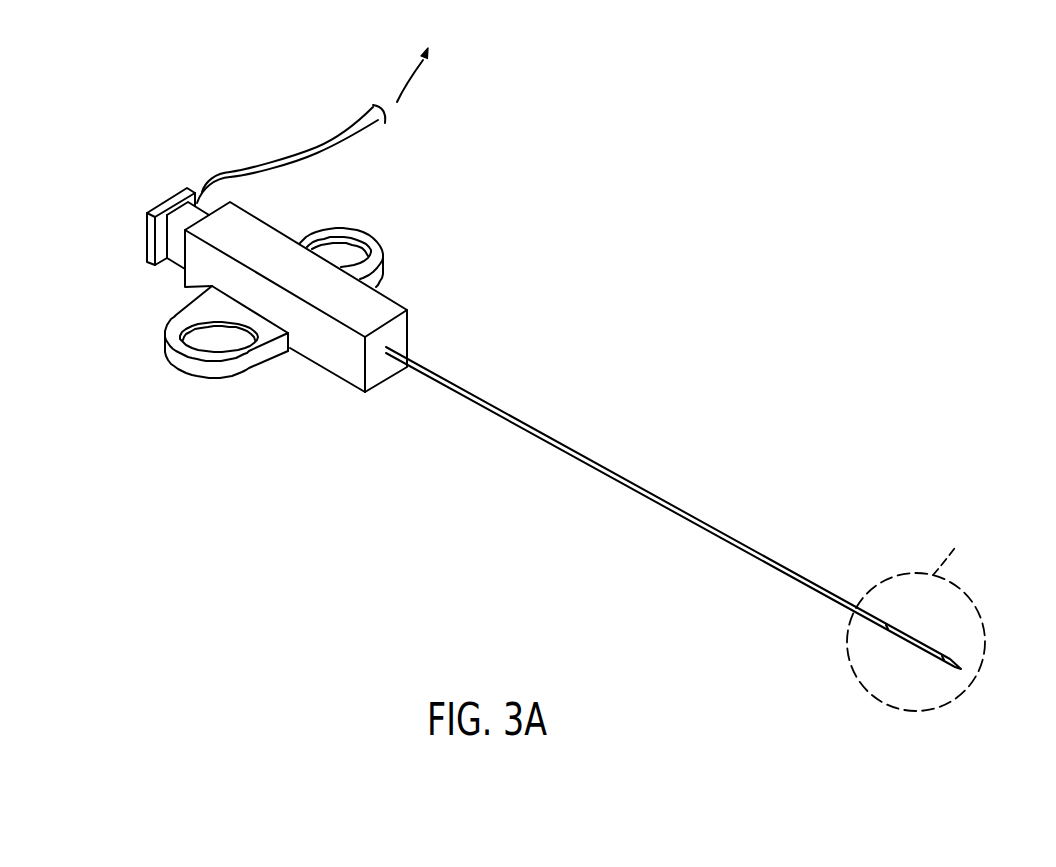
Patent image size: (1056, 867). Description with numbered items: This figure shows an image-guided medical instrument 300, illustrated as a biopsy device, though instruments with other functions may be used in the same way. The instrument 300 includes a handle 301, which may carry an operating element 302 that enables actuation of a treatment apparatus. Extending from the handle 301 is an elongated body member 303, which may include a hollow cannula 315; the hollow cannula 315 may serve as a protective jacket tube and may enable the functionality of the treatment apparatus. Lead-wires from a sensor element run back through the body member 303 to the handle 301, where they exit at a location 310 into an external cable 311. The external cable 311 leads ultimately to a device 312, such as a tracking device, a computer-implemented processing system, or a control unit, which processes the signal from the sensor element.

The image-guided medical instrument 300 is at (546, 379).
The handle 301 is at (307, 472).
The operating element 302 is at (172, 197).
The elongated body member 303 is at (840, 677).
The location 310 is at (197, 203).
The external cable 311 is at (352, 138).
The device 312 is at (413, 80).
The hollow cannula 315 is at (557, 441).